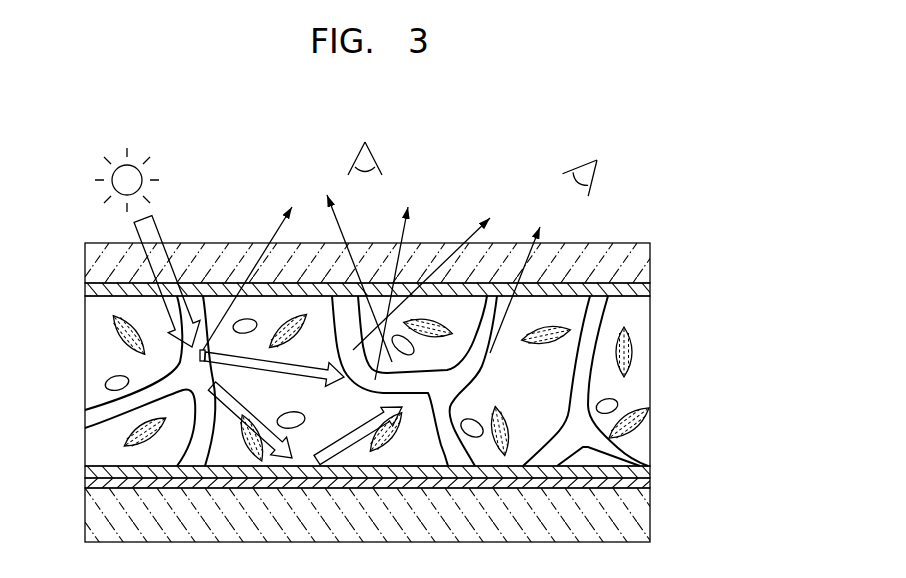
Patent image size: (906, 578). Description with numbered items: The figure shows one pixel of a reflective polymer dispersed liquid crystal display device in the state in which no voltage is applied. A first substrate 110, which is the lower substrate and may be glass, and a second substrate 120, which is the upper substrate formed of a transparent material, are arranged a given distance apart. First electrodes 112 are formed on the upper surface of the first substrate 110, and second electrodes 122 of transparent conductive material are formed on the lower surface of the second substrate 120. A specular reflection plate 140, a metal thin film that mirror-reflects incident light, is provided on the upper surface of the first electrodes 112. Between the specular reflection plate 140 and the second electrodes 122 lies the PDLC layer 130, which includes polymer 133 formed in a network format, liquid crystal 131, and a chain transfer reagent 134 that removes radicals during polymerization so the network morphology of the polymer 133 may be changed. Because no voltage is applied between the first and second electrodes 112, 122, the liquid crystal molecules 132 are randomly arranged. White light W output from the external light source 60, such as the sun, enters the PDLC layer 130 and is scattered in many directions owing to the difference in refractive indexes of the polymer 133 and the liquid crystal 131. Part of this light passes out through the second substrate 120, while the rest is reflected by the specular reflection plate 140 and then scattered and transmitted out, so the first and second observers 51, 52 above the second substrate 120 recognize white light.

The external light source 60 is at (140, 153).
The white light W is at (157, 230).
The first observer 51 is at (380, 153).
The second observer 52 is at (602, 177).
The first substrate 110 is at (650, 518).
The first electrodes 112 is at (650, 484).
The second substrate 120 is at (650, 263).
The second electrodes 122 is at (650, 291).
The polymer dispersed liquid crystal layer 130 is at (439, 330).
The liquid crystal 131 is at (650, 323).
The liquid crystal molecules 132 is at (632, 352).
The polymer 133 is at (580, 393).
The chain transfer reagent 134 is at (610, 408).
The specular reflection plate 140 is at (650, 469).